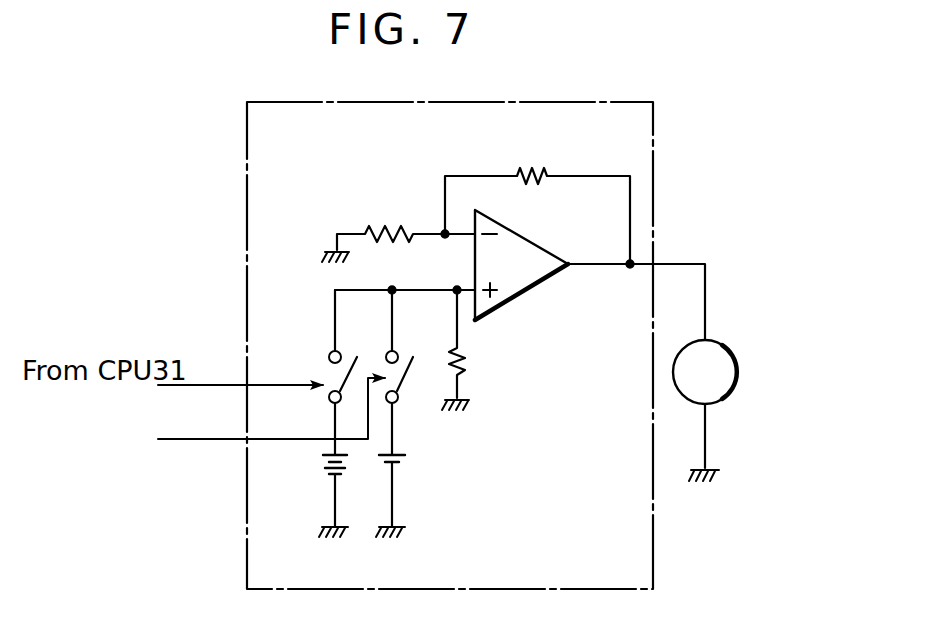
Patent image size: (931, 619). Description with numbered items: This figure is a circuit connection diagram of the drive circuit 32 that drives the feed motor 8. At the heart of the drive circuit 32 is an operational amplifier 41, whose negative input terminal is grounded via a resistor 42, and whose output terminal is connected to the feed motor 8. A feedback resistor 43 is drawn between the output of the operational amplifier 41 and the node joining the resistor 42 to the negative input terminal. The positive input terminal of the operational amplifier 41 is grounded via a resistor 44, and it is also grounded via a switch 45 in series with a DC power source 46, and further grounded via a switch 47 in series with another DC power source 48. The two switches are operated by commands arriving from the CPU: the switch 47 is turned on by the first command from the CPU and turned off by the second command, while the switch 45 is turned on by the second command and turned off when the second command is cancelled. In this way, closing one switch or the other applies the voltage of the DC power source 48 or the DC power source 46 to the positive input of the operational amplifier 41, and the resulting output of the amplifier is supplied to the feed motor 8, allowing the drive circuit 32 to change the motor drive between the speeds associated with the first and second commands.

The drive circuit 32 is at (653, 148).
The operational amplifier 41 is at (530, 237).
The resistor 42 is at (384, 228).
The feedback resistor 43 is at (529, 172).
The resistor 44 is at (465, 366).
The switch 45 is at (408, 373).
The DC power source 46 is at (402, 461).
The switch 47 is at (330, 384).
The DC power source 48 is at (350, 465).
The feed motor 8 is at (738, 372).